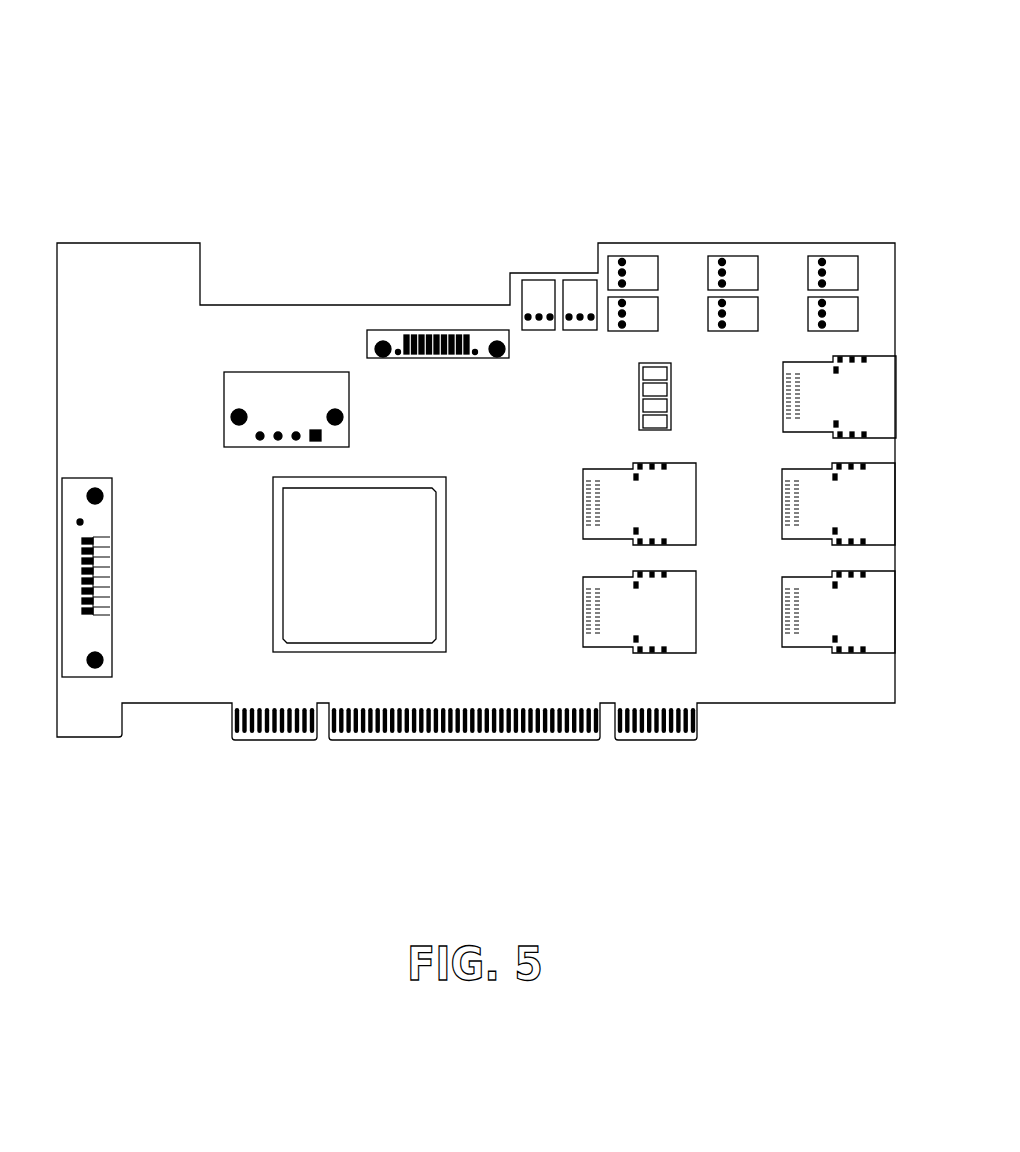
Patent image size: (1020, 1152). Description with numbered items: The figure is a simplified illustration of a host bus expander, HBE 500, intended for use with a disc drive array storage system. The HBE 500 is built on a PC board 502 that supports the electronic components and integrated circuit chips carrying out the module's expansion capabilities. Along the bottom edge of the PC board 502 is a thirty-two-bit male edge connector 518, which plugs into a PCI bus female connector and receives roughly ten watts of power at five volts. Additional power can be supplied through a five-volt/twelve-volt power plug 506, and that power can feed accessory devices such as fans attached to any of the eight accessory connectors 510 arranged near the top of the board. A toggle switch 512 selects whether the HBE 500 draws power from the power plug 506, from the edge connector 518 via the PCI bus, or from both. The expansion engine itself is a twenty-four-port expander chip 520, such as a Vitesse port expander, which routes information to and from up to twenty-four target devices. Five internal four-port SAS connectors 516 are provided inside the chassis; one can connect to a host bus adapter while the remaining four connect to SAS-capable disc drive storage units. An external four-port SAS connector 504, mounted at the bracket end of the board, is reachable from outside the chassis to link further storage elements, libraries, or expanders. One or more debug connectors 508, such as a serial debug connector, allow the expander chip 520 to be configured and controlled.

The host bus expander (HBE) 500 is at (641, 70).
The PC board 502 is at (80, 243).
The external 4-port SAS connector 504 is at (92, 478).
The 5V/12V power plug 506 is at (248, 372).
The debug connector 508 is at (388, 330).
The accessory connectors 510 is at (658, 274).
The toggle switch 512 is at (671, 412).
The internal 4-port SAS connectors 516 is at (696, 622).
The 32-bit male edge connector 518 is at (442, 756).
The 24-port expander chip 520 is at (273, 570).